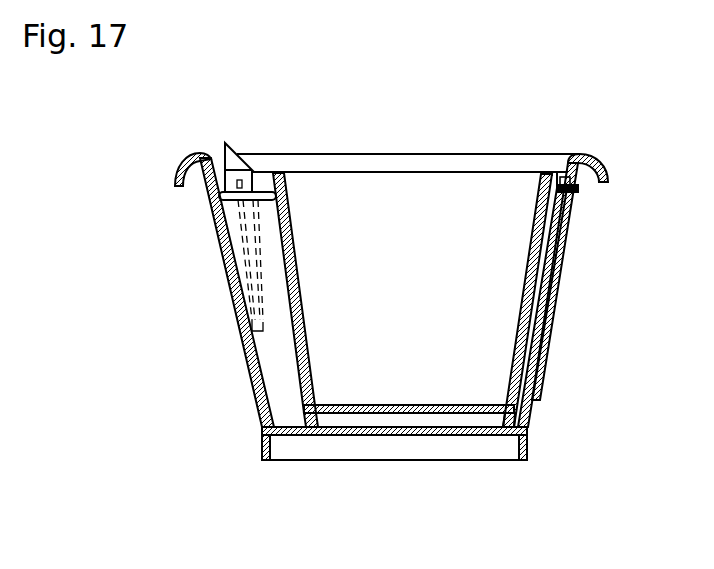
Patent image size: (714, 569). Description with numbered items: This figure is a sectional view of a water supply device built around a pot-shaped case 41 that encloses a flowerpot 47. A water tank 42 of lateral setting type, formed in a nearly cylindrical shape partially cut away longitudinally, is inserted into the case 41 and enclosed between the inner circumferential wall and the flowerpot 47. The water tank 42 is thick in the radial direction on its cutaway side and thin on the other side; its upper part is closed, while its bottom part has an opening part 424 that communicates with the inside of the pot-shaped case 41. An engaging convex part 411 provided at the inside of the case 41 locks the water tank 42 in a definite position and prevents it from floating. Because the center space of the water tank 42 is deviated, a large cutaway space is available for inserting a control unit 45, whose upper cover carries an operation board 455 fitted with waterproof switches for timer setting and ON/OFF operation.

The pot-shaped case 41 is at (567, 240).
The water tank 42 is at (267, 358).
The control unit 45 is at (258, 179).
The flowerpot 47 is at (573, 207).
The engaging convex part 411 is at (566, 180).
The opening part 424 is at (303, 418).
The operation board 455 is at (223, 146).